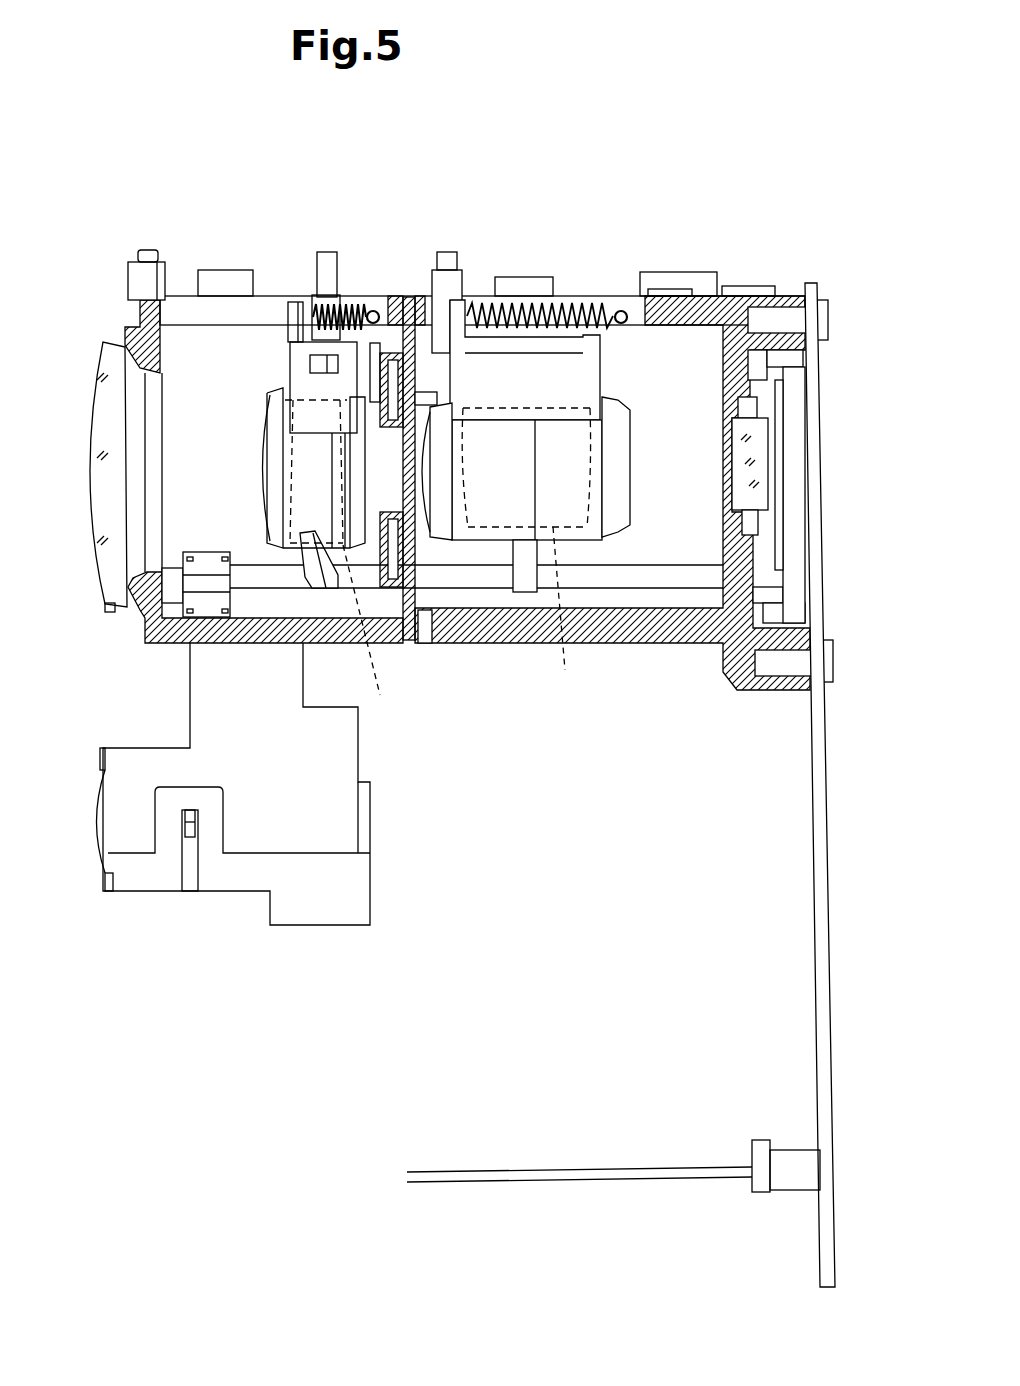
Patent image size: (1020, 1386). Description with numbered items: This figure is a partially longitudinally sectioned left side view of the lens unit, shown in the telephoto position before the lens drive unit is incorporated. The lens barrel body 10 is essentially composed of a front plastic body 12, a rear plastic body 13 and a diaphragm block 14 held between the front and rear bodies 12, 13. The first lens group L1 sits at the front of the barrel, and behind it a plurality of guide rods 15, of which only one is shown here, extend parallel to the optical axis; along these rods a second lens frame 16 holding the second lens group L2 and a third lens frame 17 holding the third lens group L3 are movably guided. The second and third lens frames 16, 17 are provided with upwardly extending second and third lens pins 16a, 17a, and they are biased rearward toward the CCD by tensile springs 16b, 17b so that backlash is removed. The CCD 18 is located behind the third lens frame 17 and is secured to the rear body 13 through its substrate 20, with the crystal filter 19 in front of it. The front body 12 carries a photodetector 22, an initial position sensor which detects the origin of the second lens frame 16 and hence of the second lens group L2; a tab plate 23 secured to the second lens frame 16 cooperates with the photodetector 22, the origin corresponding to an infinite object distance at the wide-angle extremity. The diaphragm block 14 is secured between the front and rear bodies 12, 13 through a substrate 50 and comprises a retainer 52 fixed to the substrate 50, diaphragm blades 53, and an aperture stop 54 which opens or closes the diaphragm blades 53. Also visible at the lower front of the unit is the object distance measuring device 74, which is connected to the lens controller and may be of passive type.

The lens barrel body 10 is at (795, 268).
The front plastic body 12 is at (225, 647).
The rear plastic body 13 is at (712, 627).
The diaphragm block 14 is at (410, 640).
The guide rods 15 is at (482, 582).
The second lens frame 16 is at (272, 408).
The second lens pin 16a is at (325, 277).
The tensile spring 16b is at (371, 308).
The third lens frame 17 is at (630, 437).
The third lens pin 17a is at (445, 258).
The tensile spring 17b is at (577, 305).
The color image pick-up device (CCD) 18 is at (798, 498).
The crystal filter 19 is at (763, 440).
The substrate 20 is at (822, 795).
The photodetector (initial position sensor) 22 is at (193, 583).
The tab plate 23 is at (340, 640).
The substrate 50 is at (433, 337).
The retainer 52 is at (413, 400).
The diaphragm blades 53 is at (408, 488).
The aperture stop 54 is at (412, 373).
The object distance measuring device 74 is at (132, 823).
The first lens group L1 is at (113, 575).
The second lens group L2 is at (371, 636).
The third lens group L3 is at (569, 613).